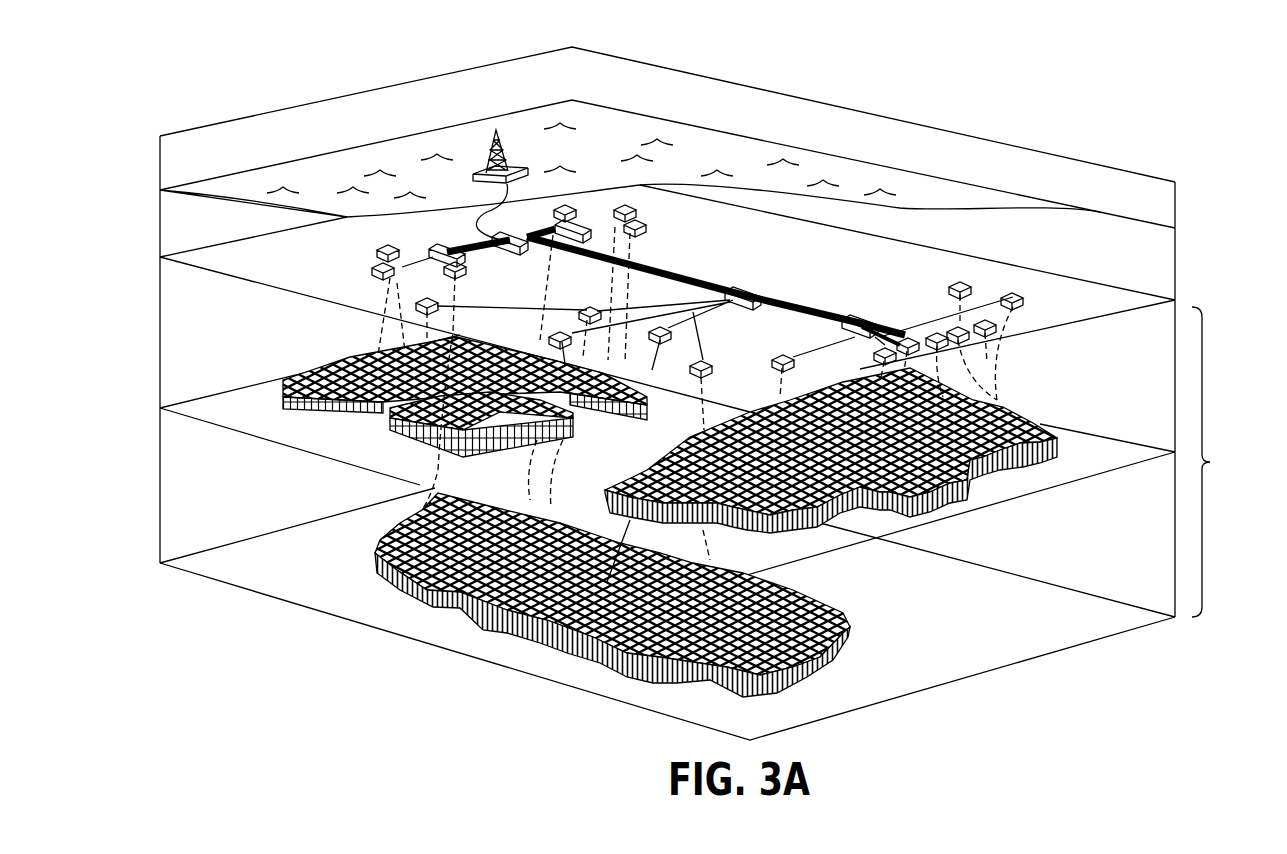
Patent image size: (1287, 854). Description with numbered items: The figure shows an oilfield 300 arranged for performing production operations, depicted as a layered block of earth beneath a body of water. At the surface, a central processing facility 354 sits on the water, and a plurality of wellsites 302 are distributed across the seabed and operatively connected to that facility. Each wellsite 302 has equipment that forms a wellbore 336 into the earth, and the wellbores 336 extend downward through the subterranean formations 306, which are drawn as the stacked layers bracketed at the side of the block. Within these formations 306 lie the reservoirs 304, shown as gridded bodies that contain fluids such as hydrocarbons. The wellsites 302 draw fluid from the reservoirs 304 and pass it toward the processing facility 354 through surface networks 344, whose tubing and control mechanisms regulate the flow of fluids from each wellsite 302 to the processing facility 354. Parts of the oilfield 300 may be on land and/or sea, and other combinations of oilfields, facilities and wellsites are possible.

The oilfield 300 is at (216, 99).
The wellsite 302 is at (803, 332).
The reservoir 304 is at (951, 522).
The subterranean formation 306 is at (703, 401).
The wellbore 336 is at (1021, 362).
The surface network 344 is at (408, 276).
The central processing facility 354 is at (479, 137).